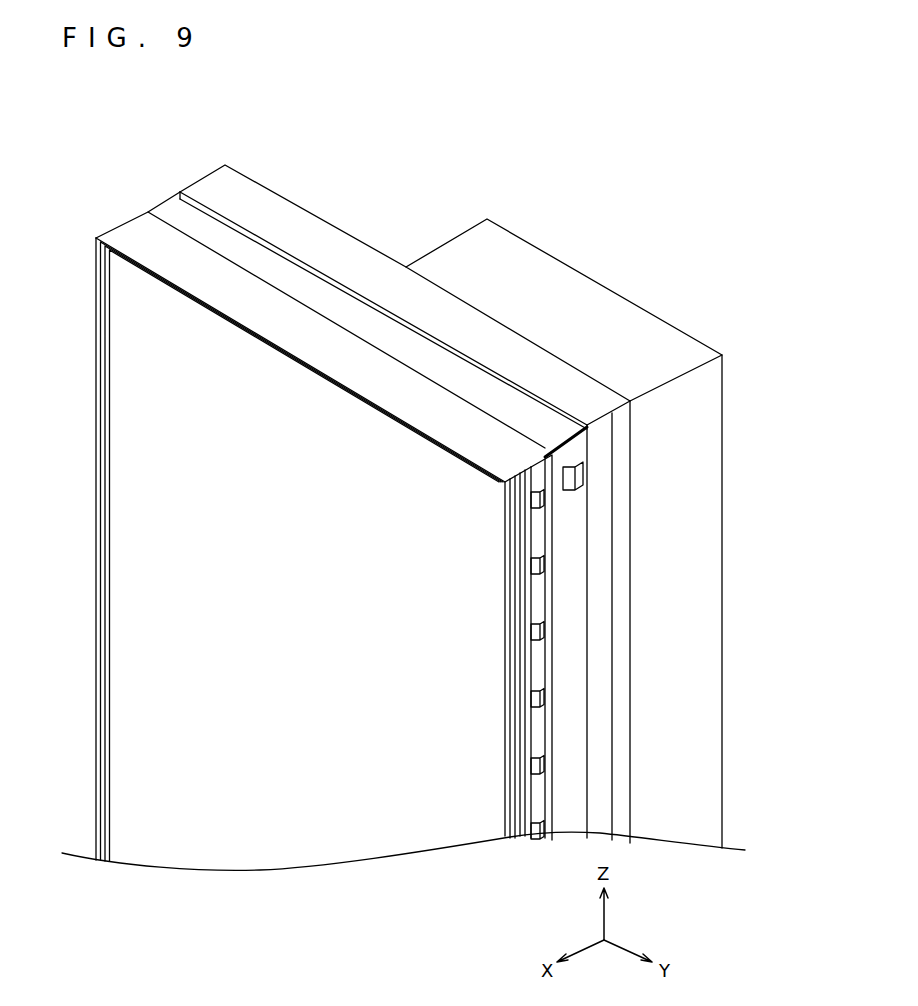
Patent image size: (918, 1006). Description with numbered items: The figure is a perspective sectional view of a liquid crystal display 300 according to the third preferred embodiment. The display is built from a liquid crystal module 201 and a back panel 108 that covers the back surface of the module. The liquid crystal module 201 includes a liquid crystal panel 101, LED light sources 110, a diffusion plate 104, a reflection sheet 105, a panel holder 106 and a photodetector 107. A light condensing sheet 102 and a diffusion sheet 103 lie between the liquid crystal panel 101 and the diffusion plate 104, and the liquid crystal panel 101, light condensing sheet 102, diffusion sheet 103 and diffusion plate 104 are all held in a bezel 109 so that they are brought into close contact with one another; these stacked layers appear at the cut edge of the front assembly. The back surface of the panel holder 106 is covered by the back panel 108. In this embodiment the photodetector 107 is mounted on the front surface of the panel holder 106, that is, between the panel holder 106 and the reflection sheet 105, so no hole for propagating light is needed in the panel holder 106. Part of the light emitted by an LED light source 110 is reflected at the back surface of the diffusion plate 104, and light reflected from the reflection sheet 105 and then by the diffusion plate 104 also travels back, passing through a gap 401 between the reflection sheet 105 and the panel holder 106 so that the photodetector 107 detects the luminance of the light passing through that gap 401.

The liquid crystal display 300 is at (194, 117).
The liquid crystal panel 101 is at (148, 525).
The light condensing sheet 102 is at (517, 797).
The diffusion sheet 103 is at (521, 813).
The diffusion plate 104 is at (524, 822).
The reflection sheet 105 is at (552, 518).
The panel holder 106 is at (203, 220).
The photodetector 107 is at (582, 477).
The back panel 108 is at (333, 248).
The bezel 109 is at (137, 245).
The LED light source 110 is at (555, 572).
The liquid crystal module 201 is at (167, 187).
The gap 401 is at (548, 466).